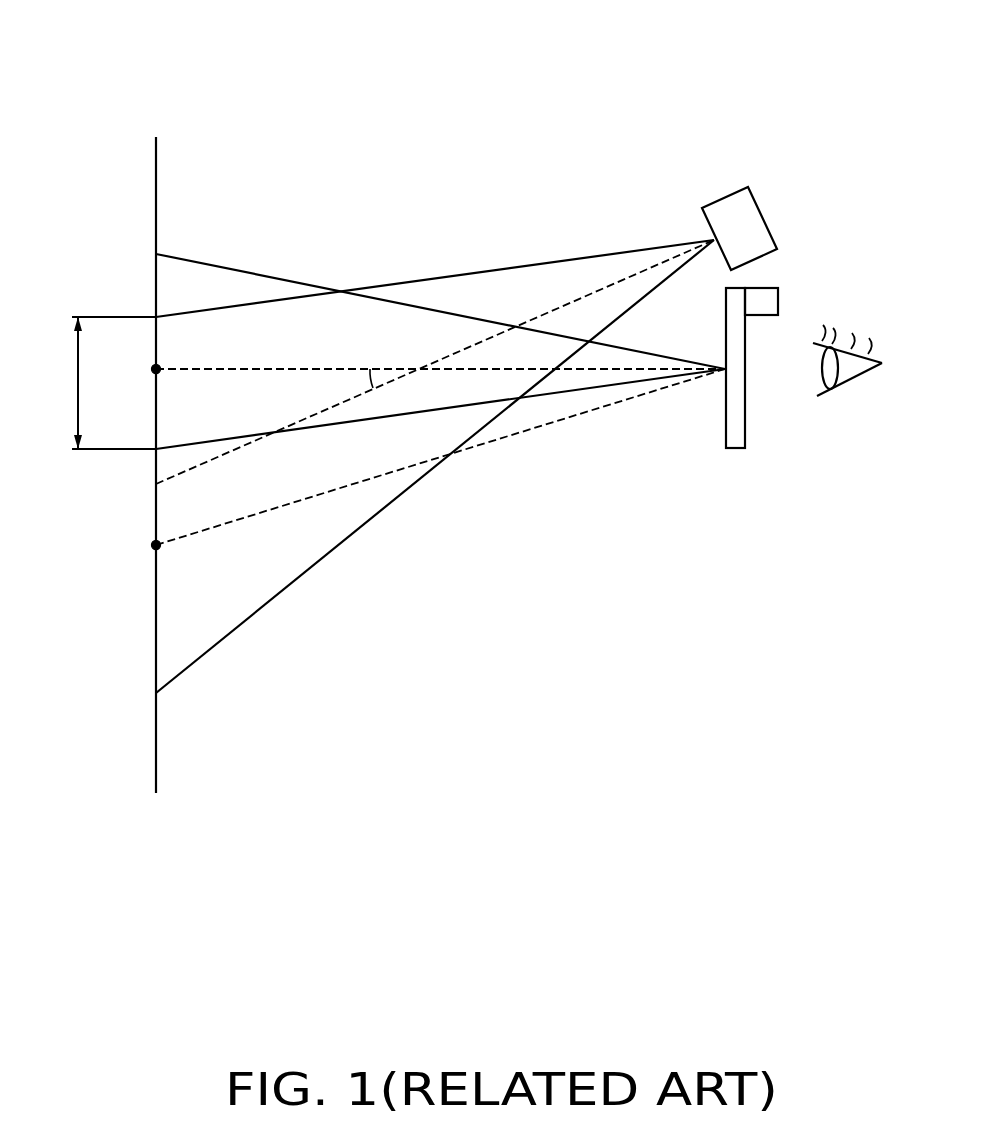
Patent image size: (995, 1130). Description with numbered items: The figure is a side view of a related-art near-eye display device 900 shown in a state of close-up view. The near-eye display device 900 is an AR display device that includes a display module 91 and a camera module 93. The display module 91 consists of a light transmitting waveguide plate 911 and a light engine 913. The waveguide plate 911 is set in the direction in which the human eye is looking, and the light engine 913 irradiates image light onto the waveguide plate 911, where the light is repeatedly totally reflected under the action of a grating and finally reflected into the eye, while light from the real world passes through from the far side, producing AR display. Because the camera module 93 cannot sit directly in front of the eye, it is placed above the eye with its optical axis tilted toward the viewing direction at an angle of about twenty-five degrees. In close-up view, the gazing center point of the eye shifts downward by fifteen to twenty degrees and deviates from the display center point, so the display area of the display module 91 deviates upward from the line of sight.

The near-eye display device 900 is at (508, 24).
The camera module 93 is at (763, 220).
The display module 91 is at (757, 426).
The light transmitting waveguide plate 911 is at (733, 440).
The light engine 913 is at (762, 307).